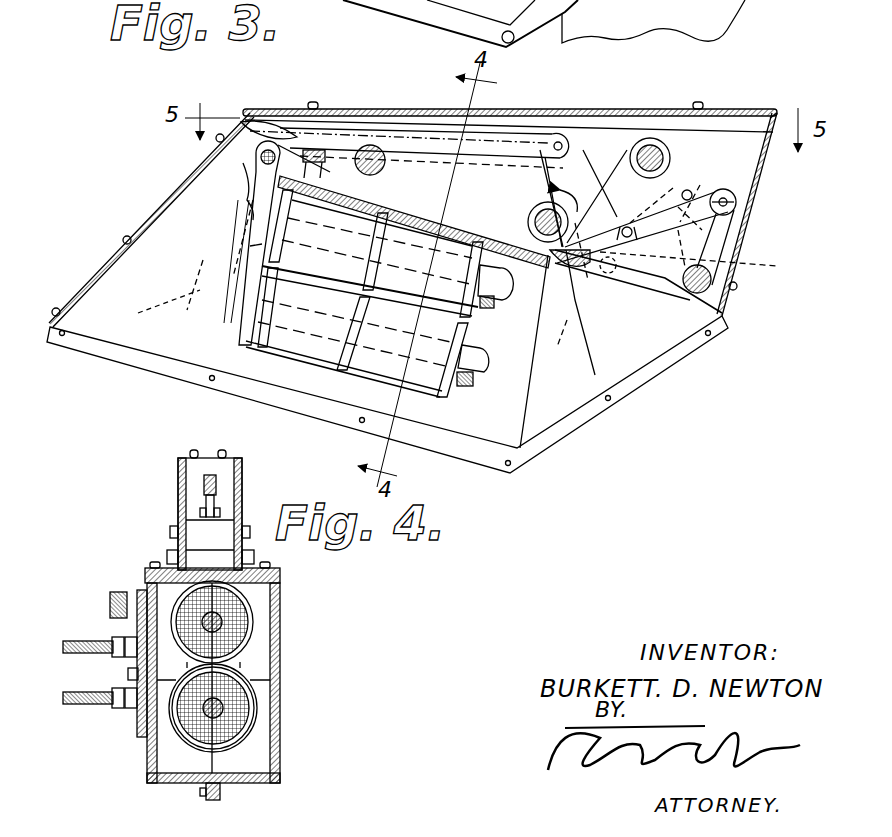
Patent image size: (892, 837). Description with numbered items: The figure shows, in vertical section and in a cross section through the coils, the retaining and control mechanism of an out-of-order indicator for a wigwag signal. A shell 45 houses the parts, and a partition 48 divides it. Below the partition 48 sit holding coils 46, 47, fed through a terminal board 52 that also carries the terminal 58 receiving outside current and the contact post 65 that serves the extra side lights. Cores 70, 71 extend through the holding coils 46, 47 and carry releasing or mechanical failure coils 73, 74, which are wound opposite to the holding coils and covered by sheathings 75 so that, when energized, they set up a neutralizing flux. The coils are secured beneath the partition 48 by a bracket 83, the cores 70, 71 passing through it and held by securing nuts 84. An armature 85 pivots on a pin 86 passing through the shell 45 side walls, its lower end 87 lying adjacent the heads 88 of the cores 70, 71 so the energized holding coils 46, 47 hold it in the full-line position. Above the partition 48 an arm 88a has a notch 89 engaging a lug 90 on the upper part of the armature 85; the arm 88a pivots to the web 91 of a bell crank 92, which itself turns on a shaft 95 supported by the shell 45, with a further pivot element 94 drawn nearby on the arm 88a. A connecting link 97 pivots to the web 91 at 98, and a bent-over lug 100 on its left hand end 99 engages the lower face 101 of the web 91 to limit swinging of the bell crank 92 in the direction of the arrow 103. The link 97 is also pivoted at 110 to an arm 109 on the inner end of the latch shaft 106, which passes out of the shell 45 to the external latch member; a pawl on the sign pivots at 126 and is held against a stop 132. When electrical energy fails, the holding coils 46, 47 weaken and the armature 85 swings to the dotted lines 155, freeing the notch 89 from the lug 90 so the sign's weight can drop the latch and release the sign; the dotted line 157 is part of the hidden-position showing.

In FIG. 3, the shell 45 is at (747, 178).
In FIG. 4, the shell 45 is at (278, 772).
In FIG. 3, the holding coil 46 is at (247, 260).
In FIG. 4, the holding coil 46 is at (167, 598).
In FIG. 3, the holding coil 47 is at (375, 368).
In FIG. 4, the holding coil 47 is at (252, 730).
In FIG. 3, the partition 48 is at (600, 355).
In FIG. 4, the partition 48 is at (258, 567).
In FIG. 4, the terminal board 52 is at (140, 727).
In FIG. 4, the terminal 58 is at (95, 697).
In FIG. 4, the contact post 65 is at (100, 648).
In FIG. 3, the core 70 is at (255, 213).
In FIG. 4, the core 70 is at (245, 602).
In FIG. 3, the core 71 is at (250, 352).
In FIG. 4, the core 71 is at (235, 698).
In FIG. 3, the mechanical failure coil 73 is at (300, 340).
In FIG. 3, the mechanical failure coil 74 is at (493, 267).
In FIG. 4, the mechanical failure coil 74 is at (222, 622).
In FIG. 4, the sheathing 75 is at (223, 708).
In FIG. 3, the bracket 83 is at (450, 387).
In FIG. 3, the securing nut 84 is at (478, 270).
In FIG. 3, the armature 85 is at (250, 246).
In FIG. 3, the pin 86 is at (245, 160).
In FIG. 3, the lower end of armature 87 is at (238, 335).
In FIG. 3, the core head 88 is at (227, 268).
In FIG. 3, the arm 88a is at (362, 135).
In FIG. 4, the arm 88a is at (204, 497).
In FIG. 3, the notch 89 is at (250, 117).
In FIG. 3, the lug 90 is at (272, 121).
In FIG. 3, the web 91 is at (590, 195).
In FIG. 3, the bell crank 92 is at (566, 247).
In FIG. 3, the roller 94 is at (385, 171).
In FIG. 3, the shaft 95 is at (540, 227).
In FIG. 3, the connecting link 97 is at (725, 195).
In FIG. 3, the pivot 98 is at (627, 233).
In FIG. 3, the left hand end of connecting link 99 is at (583, 260).
In FIG. 3, the bent-over lug 100 is at (605, 203).
In FIG. 3, the lower face of web 101 is at (557, 343).
In FIG. 3, the arrow 103 is at (687, 192).
In FIG. 3, the shaft 106 is at (735, 306).
In FIG. 3, the arm 109 is at (750, 236).
In FIG. 3, the pivotal connection 110 is at (777, 113).
In FIG. 3, the pawl pivot 126 is at (468, 36).
In FIG. 3, the stop 132 is at (653, 21).
In FIG. 3, the dotted lines 155 is at (150, 295).
In FIG. 3, the hidden link 157 is at (709, 268).